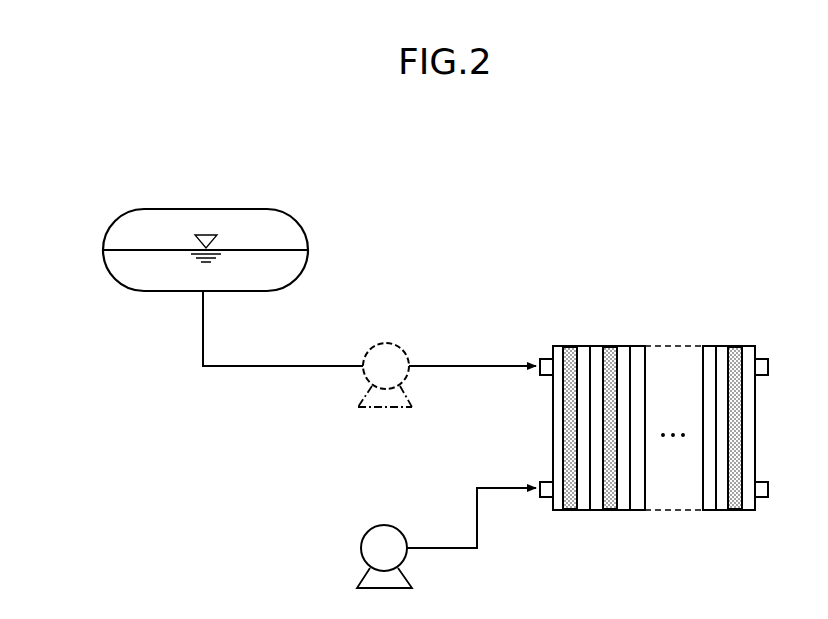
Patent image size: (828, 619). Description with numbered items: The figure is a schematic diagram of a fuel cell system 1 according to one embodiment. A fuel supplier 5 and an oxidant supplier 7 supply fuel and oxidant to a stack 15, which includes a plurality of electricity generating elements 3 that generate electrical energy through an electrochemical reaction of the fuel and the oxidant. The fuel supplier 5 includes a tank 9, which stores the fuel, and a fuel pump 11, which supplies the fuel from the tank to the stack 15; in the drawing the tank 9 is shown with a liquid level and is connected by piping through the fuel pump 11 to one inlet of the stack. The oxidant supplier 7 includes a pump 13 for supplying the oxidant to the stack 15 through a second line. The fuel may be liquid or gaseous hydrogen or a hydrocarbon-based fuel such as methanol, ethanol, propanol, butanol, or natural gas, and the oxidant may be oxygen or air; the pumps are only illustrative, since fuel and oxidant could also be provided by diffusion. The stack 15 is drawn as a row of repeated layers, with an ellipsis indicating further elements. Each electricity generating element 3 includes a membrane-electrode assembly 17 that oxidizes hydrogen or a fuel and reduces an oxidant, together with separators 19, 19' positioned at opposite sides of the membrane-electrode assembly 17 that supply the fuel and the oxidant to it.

The fuel cell system 1 is at (503, 206).
The electricity generating element 3 is at (638, 570).
The fuel supplier 5 is at (84, 221).
The oxidant supplier 7 is at (349, 541).
The tank 9 is at (205, 209).
The fuel pump 11 is at (388, 343).
The pump 13 is at (377, 525).
The stack 15 is at (712, 318).
The membrane-electrode assembly 17 is at (608, 510).
The separator 19 is at (582, 457).
The separator 19' is at (636, 457).